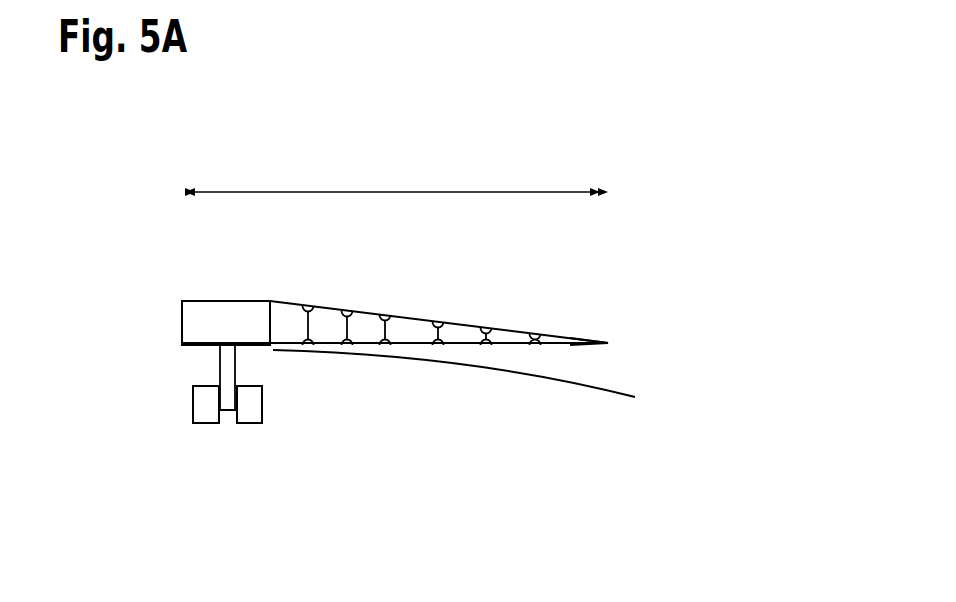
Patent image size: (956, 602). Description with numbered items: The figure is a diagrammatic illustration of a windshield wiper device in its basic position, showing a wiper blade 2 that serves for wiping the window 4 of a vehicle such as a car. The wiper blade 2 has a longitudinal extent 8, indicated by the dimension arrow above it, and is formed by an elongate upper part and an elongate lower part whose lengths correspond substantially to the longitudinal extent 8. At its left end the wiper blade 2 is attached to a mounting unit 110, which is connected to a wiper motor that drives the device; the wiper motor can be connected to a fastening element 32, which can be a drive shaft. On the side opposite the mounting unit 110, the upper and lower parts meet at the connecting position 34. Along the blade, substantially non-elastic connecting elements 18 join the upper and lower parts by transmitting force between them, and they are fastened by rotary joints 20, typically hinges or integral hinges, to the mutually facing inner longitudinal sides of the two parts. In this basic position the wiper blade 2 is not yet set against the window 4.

The wiper blade 2 is at (604, 240).
The window 4 is at (584, 389).
The longitudinal extent 8 is at (380, 192).
The connecting elements 18 is at (310, 324).
The rotary joints 20 is at (308, 305).
The fastening element 32 is at (205, 405).
The connecting position 34 is at (603, 343).
The mounting unit 110 is at (195, 322).